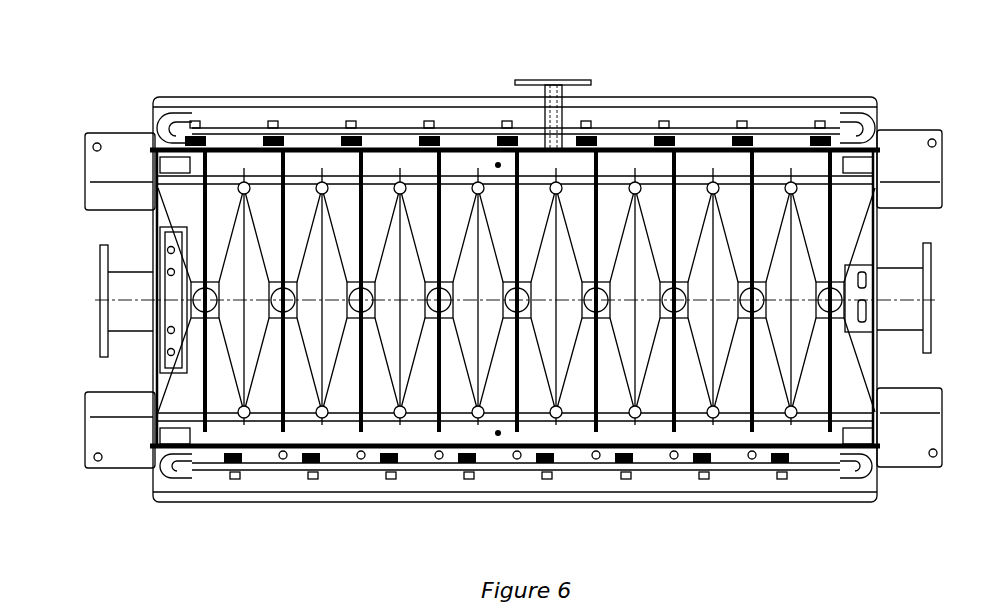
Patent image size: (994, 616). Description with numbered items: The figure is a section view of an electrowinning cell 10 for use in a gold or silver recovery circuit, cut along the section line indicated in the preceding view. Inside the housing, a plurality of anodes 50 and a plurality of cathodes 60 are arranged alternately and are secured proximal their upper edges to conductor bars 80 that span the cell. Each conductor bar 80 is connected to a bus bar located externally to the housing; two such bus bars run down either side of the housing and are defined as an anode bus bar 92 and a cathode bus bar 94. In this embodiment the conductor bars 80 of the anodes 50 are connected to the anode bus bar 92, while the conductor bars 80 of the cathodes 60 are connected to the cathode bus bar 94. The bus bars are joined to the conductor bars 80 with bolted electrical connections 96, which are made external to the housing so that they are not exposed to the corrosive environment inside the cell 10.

The electrowinning cell 10 is at (104, 64).
The anodes 50 is at (435, 205).
The cathodes 60 is at (828, 228).
The conductor bars 80 is at (553, 433).
The anode bus bar 92 is at (280, 467).
The cathode bus bar 94 is at (628, 128).
The bolted electrical connections 96 is at (505, 123).